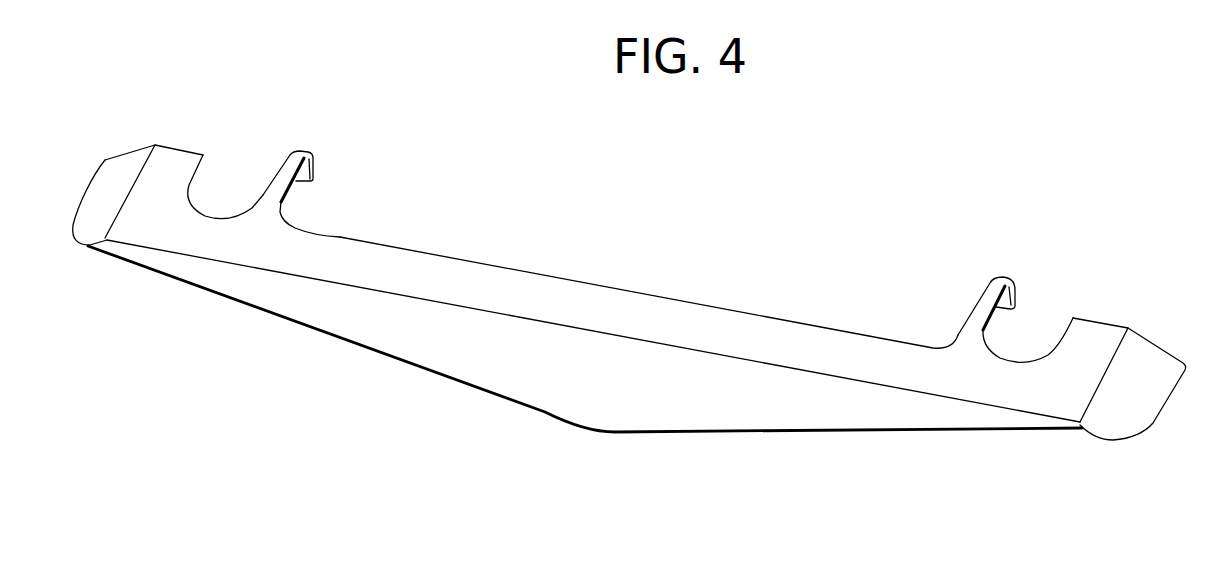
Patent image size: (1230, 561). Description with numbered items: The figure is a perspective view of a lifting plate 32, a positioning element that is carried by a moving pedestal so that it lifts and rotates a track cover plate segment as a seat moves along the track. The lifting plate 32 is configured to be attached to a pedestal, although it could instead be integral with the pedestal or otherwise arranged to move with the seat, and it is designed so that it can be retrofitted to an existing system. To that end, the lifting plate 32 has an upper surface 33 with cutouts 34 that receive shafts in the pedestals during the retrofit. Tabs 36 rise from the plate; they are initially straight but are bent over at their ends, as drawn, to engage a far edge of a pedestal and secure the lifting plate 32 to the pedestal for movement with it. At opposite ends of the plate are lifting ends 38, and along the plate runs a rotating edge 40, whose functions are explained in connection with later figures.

The lifting plate 32 is at (738, 493).
The upper surface 33 is at (573, 298).
The cutouts 34 is at (238, 153).
The tabs 36 is at (296, 158).
The lifting ends 38 is at (115, 173).
The rotating edge 40 is at (588, 387).